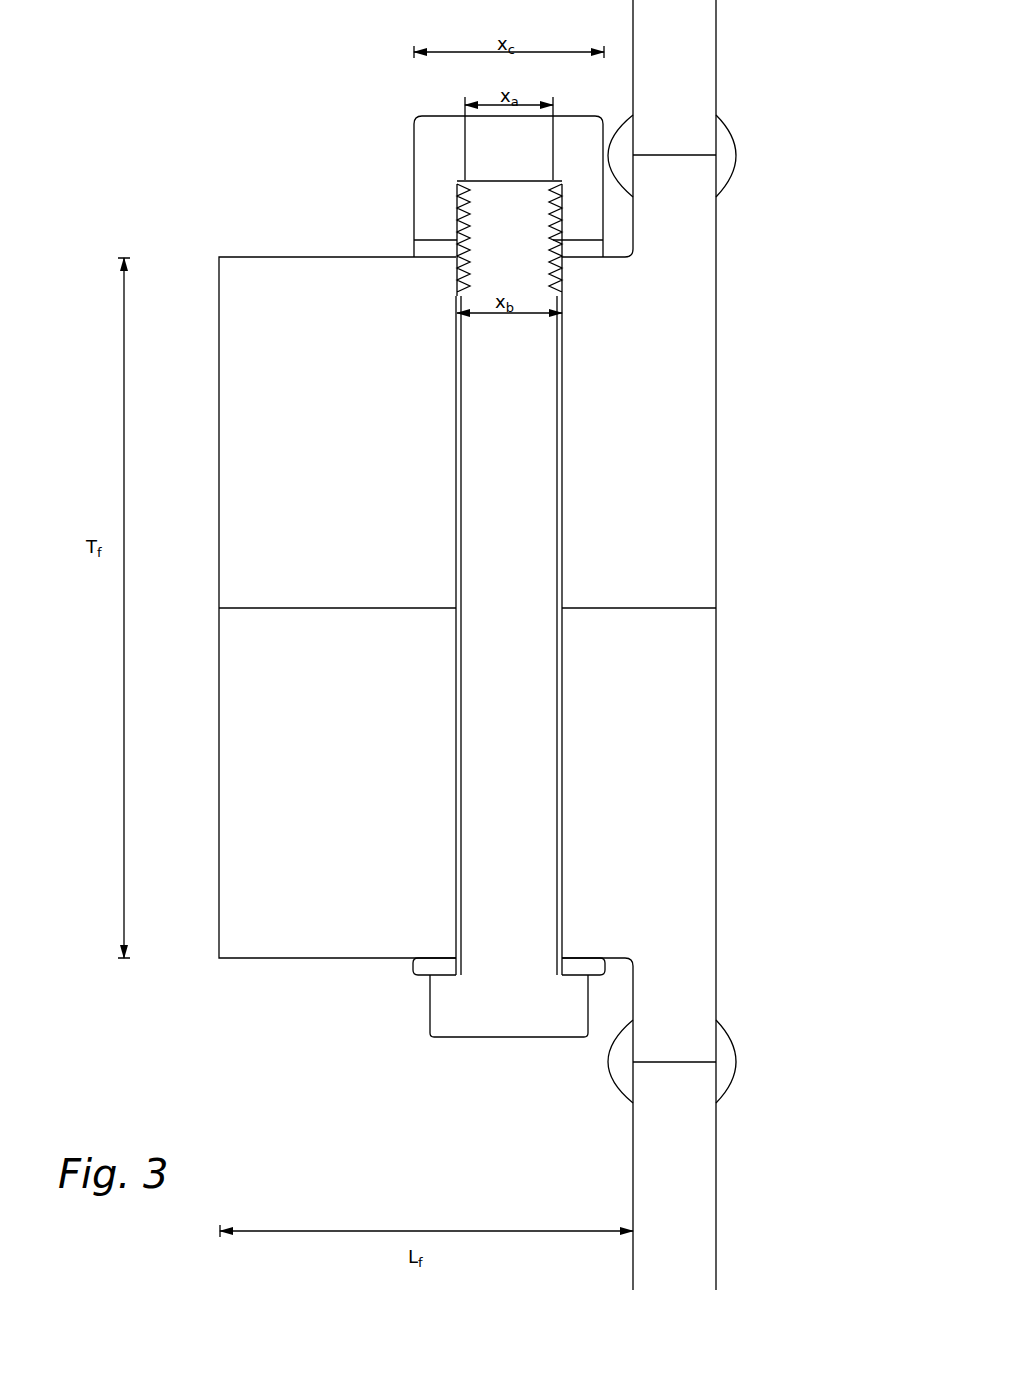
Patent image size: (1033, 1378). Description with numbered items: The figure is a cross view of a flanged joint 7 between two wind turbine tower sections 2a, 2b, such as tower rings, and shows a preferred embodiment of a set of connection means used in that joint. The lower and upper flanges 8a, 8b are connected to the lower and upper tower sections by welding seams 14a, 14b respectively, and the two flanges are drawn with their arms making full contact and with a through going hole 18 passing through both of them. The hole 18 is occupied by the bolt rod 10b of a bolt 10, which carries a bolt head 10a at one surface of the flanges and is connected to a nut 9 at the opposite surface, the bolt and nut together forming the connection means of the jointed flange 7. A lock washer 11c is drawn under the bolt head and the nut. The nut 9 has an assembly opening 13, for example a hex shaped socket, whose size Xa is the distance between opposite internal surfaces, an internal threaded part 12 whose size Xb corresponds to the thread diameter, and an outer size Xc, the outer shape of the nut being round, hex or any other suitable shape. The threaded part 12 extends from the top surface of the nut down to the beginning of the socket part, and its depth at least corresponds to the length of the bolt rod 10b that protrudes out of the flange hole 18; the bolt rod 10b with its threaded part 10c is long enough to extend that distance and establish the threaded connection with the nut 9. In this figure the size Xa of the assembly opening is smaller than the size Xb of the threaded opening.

The tower section 2a is at (673, 1150).
The tower section 2b is at (692, 13).
The flanged joint 7 is at (305, 673).
The lower flange 8a is at (297, 775).
The upper flange 8b is at (290, 481).
The nut 9 is at (433, 213).
The bolt 10 is at (525, 690).
The bolt head 10a is at (465, 1023).
The bolt rod 10b is at (520, 758).
The threaded part of the bolt shaft 10c is at (565, 280).
The washer 11c is at (430, 965).
The internal threaded part of the nut 12 is at (553, 210).
The assembly opening of the nut 13 is at (543, 155).
The welded connection 14a is at (723, 1062).
The welded connection 14b is at (725, 152).
The hole in the upper and lower flange 18 is at (562, 548).